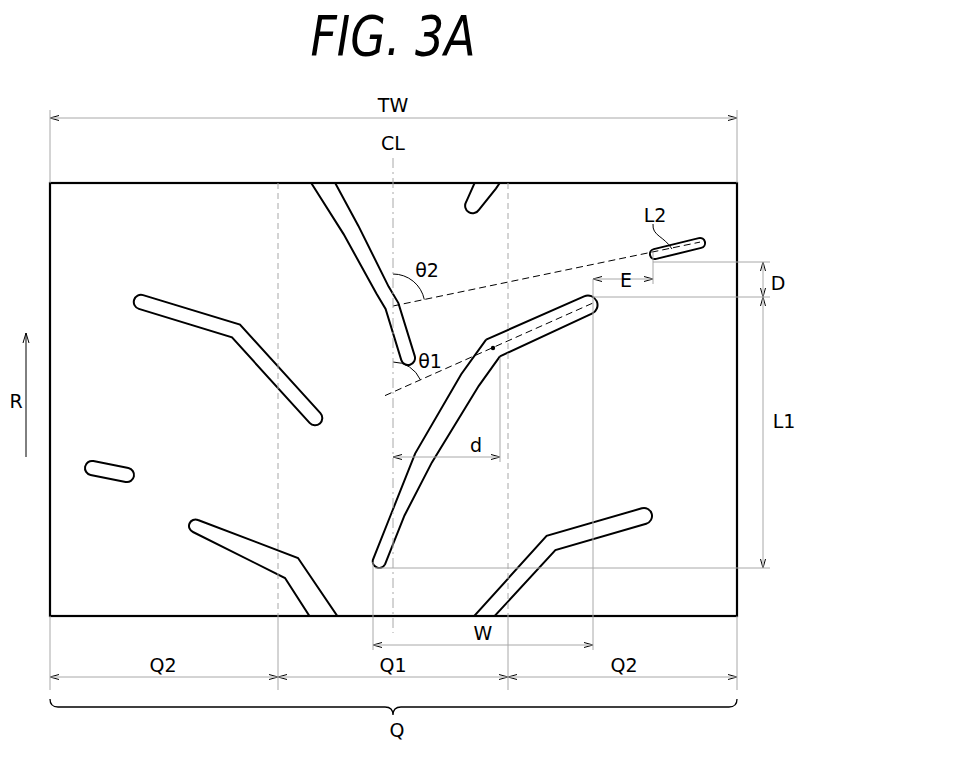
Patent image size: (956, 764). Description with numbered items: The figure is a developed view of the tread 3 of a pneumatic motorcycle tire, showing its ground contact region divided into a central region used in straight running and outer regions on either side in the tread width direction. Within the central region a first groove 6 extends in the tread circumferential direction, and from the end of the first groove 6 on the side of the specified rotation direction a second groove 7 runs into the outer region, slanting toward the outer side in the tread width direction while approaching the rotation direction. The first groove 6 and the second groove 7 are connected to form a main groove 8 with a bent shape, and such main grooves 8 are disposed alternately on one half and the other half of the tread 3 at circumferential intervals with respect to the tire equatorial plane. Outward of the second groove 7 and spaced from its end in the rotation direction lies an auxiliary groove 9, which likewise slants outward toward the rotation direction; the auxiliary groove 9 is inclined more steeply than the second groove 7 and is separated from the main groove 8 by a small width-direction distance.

The tread 3 is at (165, 183).
The first groove 6 is at (415, 477).
The second groove 7 is at (530, 338).
The main groove 8 is at (485, 431).
The auxiliary groove 9 is at (692, 242).